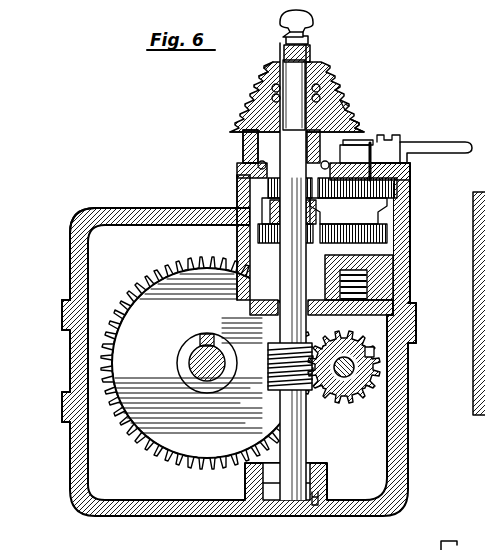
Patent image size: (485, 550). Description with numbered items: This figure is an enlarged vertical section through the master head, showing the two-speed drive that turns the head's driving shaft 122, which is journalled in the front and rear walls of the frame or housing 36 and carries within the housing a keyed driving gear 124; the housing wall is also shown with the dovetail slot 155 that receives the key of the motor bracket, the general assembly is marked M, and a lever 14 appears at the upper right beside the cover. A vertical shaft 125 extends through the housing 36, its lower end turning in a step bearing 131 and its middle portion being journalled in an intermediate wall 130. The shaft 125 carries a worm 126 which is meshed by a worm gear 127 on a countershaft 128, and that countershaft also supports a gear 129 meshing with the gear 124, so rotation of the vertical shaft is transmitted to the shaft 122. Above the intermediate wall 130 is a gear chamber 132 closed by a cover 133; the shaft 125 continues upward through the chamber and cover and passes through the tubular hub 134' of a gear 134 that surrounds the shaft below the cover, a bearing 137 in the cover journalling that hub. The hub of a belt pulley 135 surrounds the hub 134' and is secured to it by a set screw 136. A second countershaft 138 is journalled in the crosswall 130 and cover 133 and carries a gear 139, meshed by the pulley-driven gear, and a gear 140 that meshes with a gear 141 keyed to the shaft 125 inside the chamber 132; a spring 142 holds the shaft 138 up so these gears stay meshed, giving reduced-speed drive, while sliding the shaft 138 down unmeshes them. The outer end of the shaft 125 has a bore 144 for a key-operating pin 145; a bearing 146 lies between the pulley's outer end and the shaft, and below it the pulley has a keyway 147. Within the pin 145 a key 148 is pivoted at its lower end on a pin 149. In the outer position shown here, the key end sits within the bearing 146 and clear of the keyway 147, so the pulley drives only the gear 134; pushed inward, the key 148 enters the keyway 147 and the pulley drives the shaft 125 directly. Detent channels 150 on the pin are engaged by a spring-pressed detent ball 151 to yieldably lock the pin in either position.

The lever 14 is at (447, 147).
The master head frame or housing 36 is at (163, 518).
The motor housing M is at (62, 477).
The shaft 122 is at (197, 367).
The driving gear 124 is at (148, 276).
The shaft 125 is at (282, 190).
The worm 126 is at (272, 388).
The worm gear 127 is at (345, 398).
The countershaft 128 is at (354, 366).
The gear 129 is at (374, 350).
The intermediate wall 130 is at (383, 258).
The step bearing 131 is at (290, 519).
The gear chamber 132 is at (238, 200).
The cover 133 is at (258, 165).
The gear 134 is at (239, 151).
The tubular hub 134' is at (393, 109).
The pulley 135 is at (370, 135).
The set screw 136 is at (343, 150).
The bearing 137 is at (343, 166).
The countershaft 138 is at (363, 262).
The gear 139 is at (410, 180).
The gear 140 is at (390, 235).
The gear 141 is at (236, 204).
The spring 142 is at (367, 294).
The bore 144 is at (262, 131).
The key-operating pin 145 is at (308, 26).
The bearing 146 is at (333, 84).
The keyway 147 is at (350, 108).
The key 148 is at (312, 68).
The pin 149 is at (262, 93).
The detent channels 150 is at (282, 50).
The spring-pressed detent ball 151 is at (300, 62).
The dovetail slot 155 is at (72, 382).